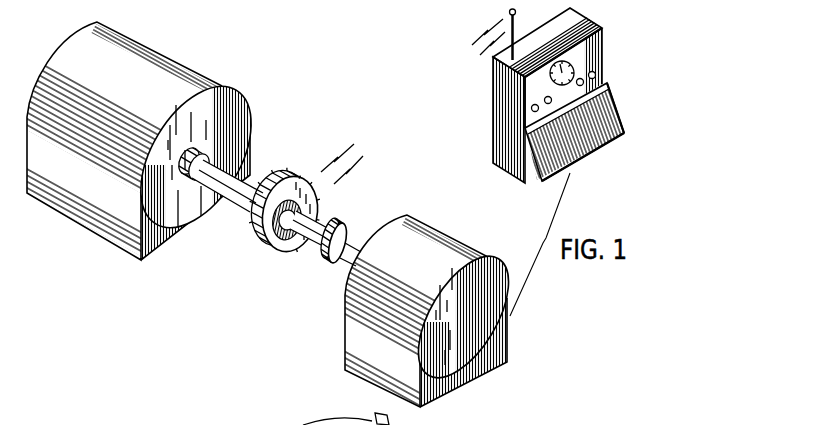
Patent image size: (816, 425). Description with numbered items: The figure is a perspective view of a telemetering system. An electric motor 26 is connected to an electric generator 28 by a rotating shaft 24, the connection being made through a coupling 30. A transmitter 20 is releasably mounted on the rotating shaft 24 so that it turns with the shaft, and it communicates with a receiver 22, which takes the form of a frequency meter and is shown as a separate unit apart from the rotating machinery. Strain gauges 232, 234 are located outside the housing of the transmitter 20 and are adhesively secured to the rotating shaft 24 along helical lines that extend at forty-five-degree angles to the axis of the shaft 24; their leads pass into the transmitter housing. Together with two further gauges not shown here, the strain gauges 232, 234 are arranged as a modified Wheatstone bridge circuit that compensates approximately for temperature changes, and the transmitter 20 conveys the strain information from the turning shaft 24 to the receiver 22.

The transmitter 20 is at (288, 163).
The receiver 22 is at (611, 57).
The rotating shaft 24 is at (246, 190).
The electric motor 26 is at (190, 77).
The electric generator 28 is at (438, 250).
The coupling 30 is at (350, 229).
The strain gauge 232 is at (299, 231).
The strain gauge 234 is at (296, 222).